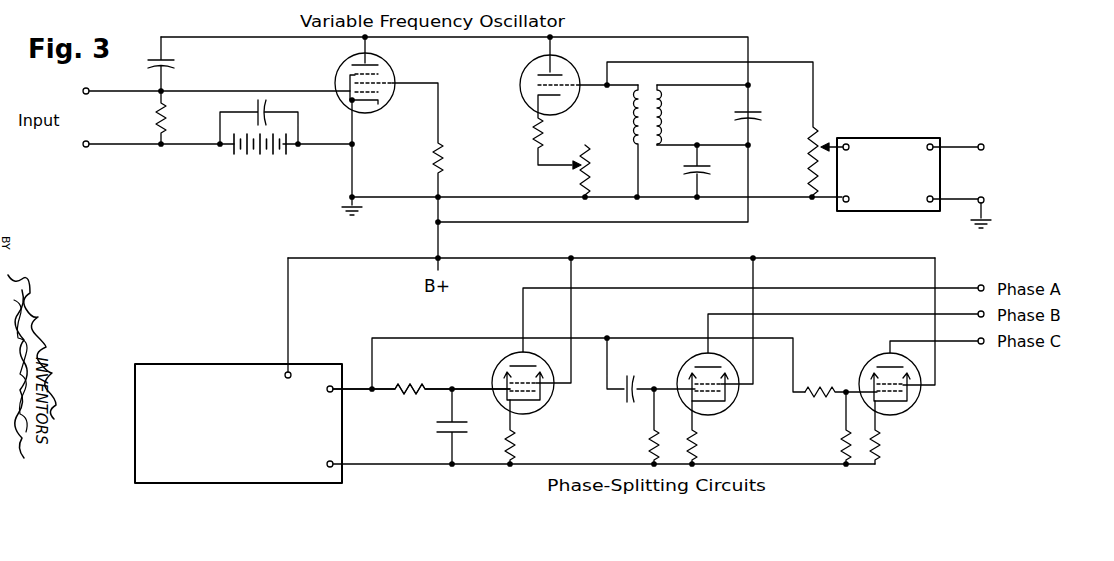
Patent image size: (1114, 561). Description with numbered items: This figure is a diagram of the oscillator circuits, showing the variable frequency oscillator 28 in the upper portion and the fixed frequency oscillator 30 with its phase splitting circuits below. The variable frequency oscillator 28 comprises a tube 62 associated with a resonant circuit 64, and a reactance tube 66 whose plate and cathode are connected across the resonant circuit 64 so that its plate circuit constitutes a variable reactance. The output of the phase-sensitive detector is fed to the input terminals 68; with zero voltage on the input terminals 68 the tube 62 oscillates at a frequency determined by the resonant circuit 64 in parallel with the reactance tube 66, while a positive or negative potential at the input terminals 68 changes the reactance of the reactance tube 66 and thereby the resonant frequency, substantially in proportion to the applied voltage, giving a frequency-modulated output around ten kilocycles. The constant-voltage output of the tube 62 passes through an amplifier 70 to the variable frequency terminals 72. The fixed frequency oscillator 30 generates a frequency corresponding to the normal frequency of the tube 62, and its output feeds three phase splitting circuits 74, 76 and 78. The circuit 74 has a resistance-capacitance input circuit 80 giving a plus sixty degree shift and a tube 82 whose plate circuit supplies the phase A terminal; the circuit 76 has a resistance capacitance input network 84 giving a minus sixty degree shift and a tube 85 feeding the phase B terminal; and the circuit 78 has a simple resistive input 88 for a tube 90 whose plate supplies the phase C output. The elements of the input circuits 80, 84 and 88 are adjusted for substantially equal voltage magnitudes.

The variable frequency oscillator 28 is at (617, 33).
The fixed frequency oscillator 30 is at (189, 361).
The tube 62 is at (522, 72).
The resonant circuit 64 is at (667, 121).
The reactance tube 66 is at (393, 72).
The input terminals 68 is at (92, 122).
The amplifier 70 is at (879, 143).
The variable frequency terminals 72 is at (978, 172).
The phase splitting circuit 74 is at (478, 458).
The phase splitting circuit 76 is at (700, 442).
The phase splitting circuit 78 is at (880, 450).
The resistance-capacitance input circuit 80 is at (442, 410).
The tube 82 is at (545, 394).
The resistance capacitance input network 84 is at (650, 410).
The tube 85 is at (727, 400).
The resistive input 88 is at (838, 402).
The tube 90 is at (915, 400).